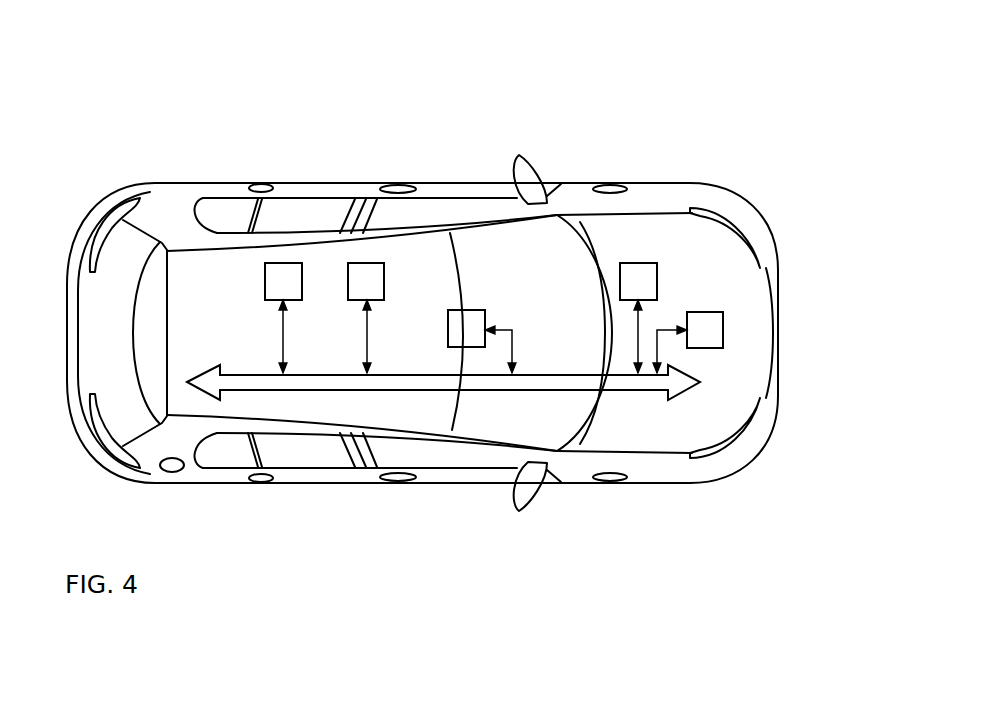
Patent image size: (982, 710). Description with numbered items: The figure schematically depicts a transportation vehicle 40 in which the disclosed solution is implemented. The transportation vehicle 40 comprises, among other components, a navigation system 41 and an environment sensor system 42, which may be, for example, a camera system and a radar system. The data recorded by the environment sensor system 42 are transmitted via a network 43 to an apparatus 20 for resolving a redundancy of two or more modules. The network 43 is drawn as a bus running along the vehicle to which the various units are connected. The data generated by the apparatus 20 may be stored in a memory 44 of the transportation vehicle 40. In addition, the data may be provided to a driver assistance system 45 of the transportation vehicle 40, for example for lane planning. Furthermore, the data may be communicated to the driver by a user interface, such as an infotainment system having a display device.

The transportation vehicle 40 is at (660, 183).
The navigation system 41 is at (273, 263).
The memory 44 is at (355, 263).
The environment sensor system 42 is at (462, 312).
The apparatus 20 is at (627, 263).
The driver assistance system 45 is at (703, 312).
The network 43 is at (307, 388).